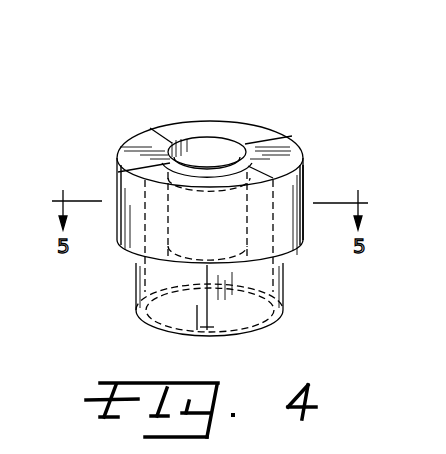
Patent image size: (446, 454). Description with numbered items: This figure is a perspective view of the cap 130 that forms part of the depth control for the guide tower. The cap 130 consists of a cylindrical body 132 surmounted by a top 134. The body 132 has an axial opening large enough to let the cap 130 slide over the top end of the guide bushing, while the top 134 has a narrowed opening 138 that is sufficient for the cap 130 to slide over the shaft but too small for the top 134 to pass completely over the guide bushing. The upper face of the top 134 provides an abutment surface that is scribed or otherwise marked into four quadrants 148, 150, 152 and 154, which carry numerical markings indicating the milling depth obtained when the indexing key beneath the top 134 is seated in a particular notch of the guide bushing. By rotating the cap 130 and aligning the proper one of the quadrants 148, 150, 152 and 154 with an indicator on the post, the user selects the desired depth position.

The cap 130 is at (213, 168).
The cylindrical body 132 is at (137, 290).
The top 134 is at (125, 183).
The narrowed opening 138 is at (208, 155).
The quadrant 148 is at (137, 137).
The quadrant 150 is at (303, 170).
The quadrant 152 is at (287, 148).
The quadrant 154 is at (244, 89).